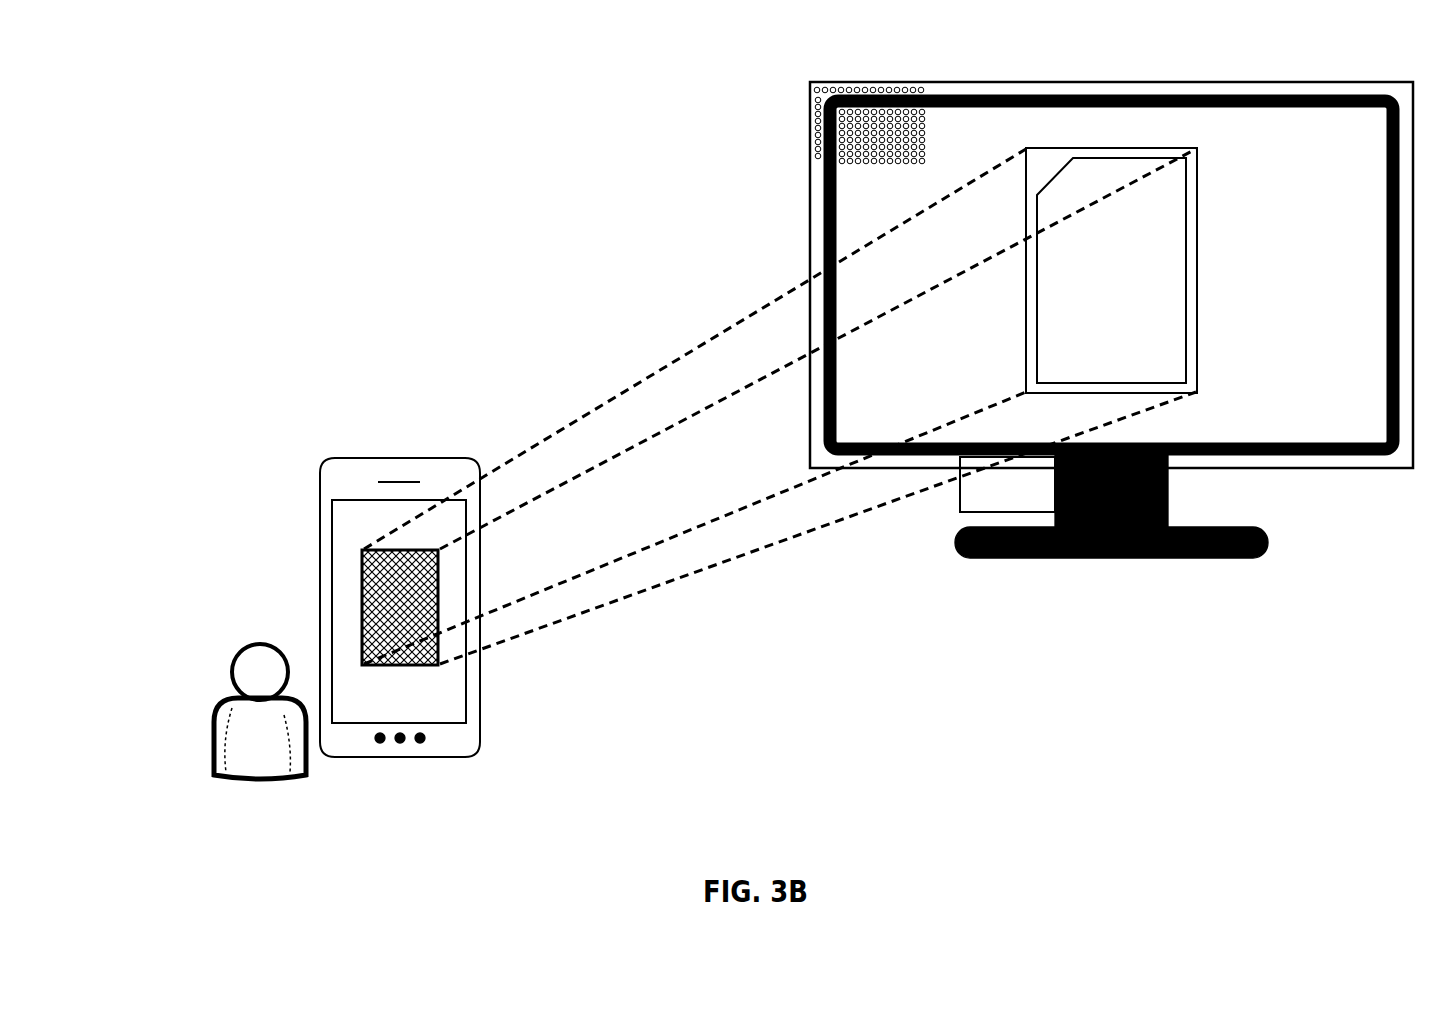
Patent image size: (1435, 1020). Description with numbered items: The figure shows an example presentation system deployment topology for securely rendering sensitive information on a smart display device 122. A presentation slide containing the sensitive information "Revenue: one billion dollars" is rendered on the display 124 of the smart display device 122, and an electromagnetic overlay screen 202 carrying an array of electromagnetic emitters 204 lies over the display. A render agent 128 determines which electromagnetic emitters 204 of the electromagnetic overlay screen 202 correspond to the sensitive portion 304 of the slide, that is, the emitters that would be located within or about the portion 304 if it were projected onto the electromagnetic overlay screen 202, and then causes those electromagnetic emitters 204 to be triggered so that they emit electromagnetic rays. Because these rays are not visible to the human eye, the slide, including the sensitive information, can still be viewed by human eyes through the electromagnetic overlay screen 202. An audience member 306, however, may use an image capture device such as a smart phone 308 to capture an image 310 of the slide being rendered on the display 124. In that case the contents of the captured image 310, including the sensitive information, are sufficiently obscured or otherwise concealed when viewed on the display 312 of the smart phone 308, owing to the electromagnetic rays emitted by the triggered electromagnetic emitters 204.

The smart display device 122 is at (1112, 97).
The display 124 is at (1298, 425).
The render agent 128 is at (1007, 484).
The electromagnetic overlay screen 202 is at (1300, 82).
The electromagnetic emitters 204 is at (845, 138).
The portion 304 is at (1200, 178).
The audience member 306 is at (212, 716).
The smart phone 308 is at (355, 458).
The image 310 is at (362, 598).
The display of smart phone 312 is at (333, 528).